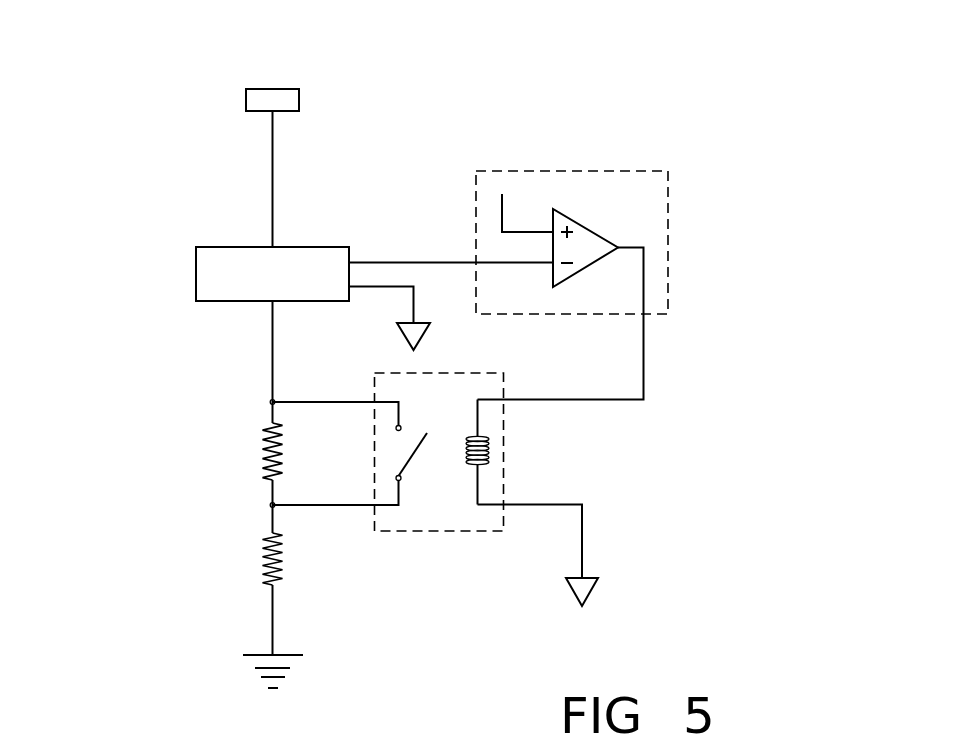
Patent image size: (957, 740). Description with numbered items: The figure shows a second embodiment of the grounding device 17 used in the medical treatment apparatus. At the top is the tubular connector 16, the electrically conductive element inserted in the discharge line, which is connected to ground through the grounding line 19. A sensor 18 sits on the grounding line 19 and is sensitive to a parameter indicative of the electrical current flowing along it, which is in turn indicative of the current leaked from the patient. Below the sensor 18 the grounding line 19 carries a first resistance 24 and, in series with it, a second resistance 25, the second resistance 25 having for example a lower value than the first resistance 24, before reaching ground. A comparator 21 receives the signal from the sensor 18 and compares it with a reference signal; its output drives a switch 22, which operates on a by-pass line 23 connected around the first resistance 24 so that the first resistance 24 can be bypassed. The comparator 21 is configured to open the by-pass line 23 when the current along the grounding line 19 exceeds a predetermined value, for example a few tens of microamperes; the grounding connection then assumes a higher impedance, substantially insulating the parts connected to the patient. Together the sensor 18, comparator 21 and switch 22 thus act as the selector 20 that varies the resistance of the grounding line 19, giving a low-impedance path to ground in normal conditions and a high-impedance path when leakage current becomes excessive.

The tubular connector 16 is at (257, 100).
The grounding device 17 is at (703, 354).
The sensor 18 is at (196, 270).
The grounding line 19 is at (272, 169).
The selector 20 is at (670, 514).
The comparator 21 is at (618, 171).
The switch 22 is at (430, 531).
The by-pass line 23 is at (320, 401).
The first resistance 24 is at (263, 453).
The second resistance 25 is at (263, 563).